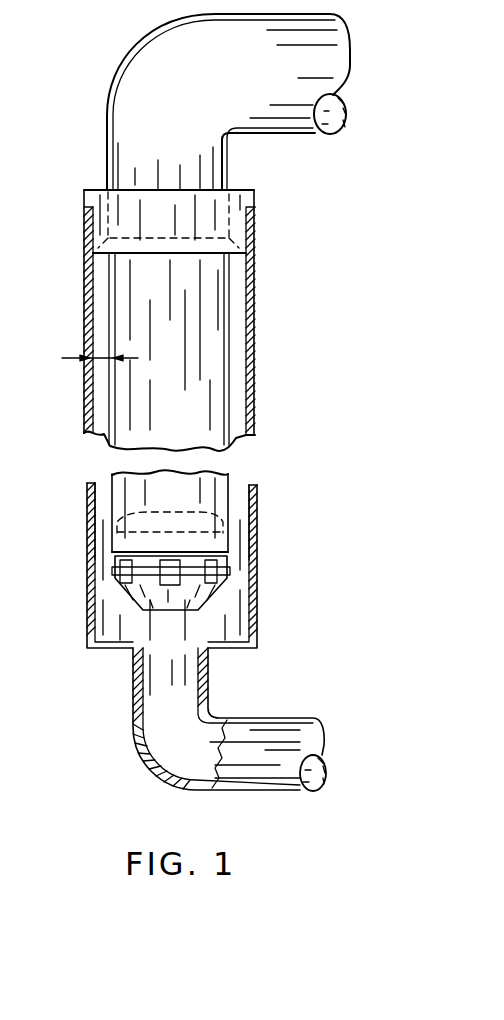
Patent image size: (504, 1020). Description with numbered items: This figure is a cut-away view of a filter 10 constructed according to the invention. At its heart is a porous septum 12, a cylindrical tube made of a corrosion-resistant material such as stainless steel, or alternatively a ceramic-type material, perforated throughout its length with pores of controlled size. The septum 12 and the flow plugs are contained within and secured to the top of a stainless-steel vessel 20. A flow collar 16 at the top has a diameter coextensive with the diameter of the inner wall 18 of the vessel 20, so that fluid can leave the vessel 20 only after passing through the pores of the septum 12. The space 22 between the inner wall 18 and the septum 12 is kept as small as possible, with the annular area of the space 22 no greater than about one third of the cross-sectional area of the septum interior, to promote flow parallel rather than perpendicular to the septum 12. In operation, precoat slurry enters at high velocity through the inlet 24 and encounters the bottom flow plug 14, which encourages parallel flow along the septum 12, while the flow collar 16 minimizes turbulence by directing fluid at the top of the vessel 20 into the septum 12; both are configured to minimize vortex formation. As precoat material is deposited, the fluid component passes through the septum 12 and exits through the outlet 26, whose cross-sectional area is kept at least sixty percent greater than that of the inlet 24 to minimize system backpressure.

The filter 10 is at (410, 270).
The porous septum 12 is at (220, 345).
The flow plug 14 is at (208, 588).
The flow collar 16 is at (237, 224).
The inner wall 18 is at (97, 493).
The vessel 20 is at (87, 570).
The space 22 is at (97, 363).
The inlet 24 is at (325, 733).
The outlet 26 is at (350, 48).